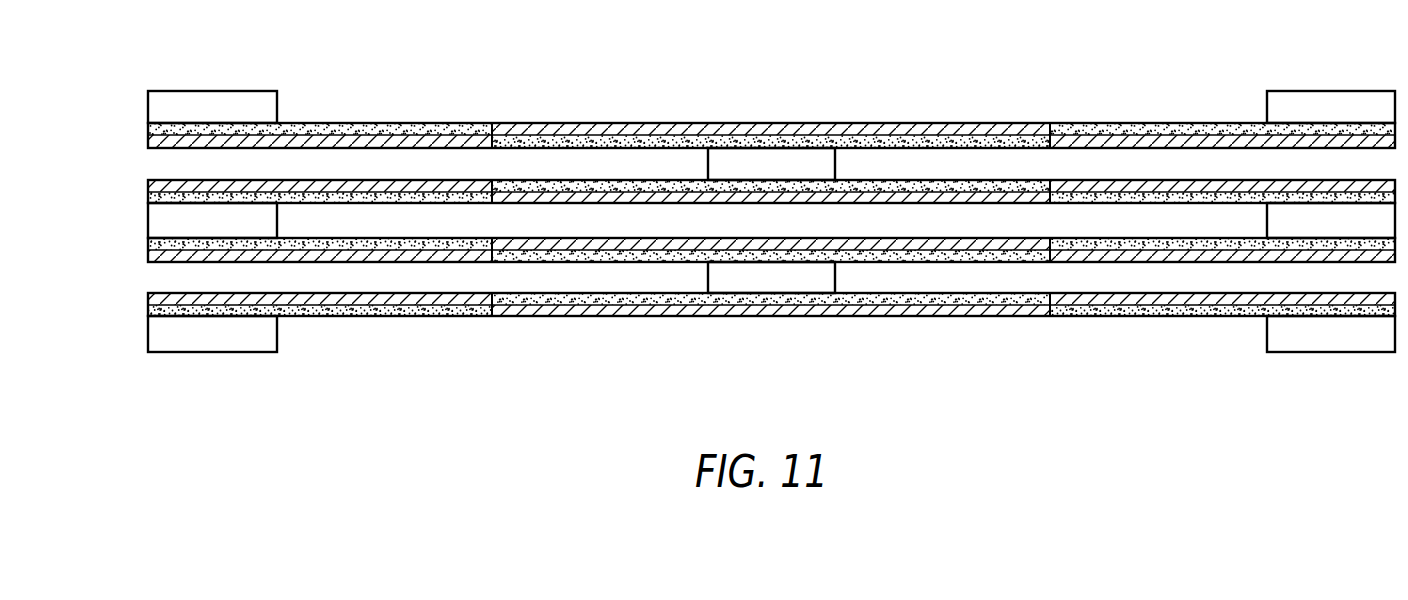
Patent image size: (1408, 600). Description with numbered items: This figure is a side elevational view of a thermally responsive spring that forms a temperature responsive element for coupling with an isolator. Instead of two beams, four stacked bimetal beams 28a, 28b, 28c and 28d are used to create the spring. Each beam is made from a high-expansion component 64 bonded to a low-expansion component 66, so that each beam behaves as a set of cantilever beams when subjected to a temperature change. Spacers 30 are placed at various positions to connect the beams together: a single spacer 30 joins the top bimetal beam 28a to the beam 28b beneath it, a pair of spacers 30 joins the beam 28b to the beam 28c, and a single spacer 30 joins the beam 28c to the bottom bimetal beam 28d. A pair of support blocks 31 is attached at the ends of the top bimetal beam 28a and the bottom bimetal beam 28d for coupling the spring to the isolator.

The top bimetal beam 28a is at (148, 130).
The bimetal beam 28b is at (148, 196).
The bimetal beam 28c is at (148, 243).
The bottom bimetal beam 28d is at (148, 310).
The spacer 30 is at (773, 162).
The support block 31 is at (212, 91).
The high-expansion component 64 is at (325, 130).
The low-expansion component 66 is at (410, 142).